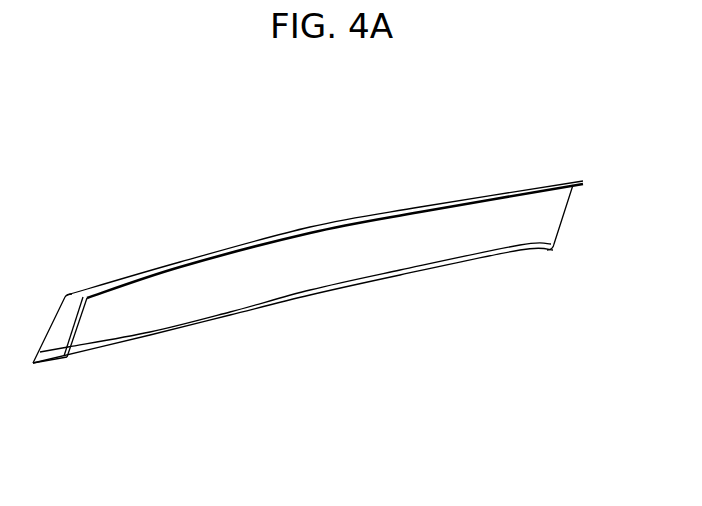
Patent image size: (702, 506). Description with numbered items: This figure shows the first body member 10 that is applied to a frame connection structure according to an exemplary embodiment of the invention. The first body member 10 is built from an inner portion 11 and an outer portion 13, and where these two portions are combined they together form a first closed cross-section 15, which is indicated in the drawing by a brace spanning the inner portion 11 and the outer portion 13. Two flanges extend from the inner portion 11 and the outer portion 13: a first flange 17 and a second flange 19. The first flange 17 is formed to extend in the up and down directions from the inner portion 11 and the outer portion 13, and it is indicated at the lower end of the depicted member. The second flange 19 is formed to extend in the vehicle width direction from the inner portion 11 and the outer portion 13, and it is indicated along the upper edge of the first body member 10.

The first body member 10 is at (307, 289).
The inner portion 11 is at (167, 308).
The outer portion 13 is at (70, 313).
The first closed cross-section 15 is at (293, 342).
The first flange 17 is at (33, 365).
The second flange 19 is at (246, 254).